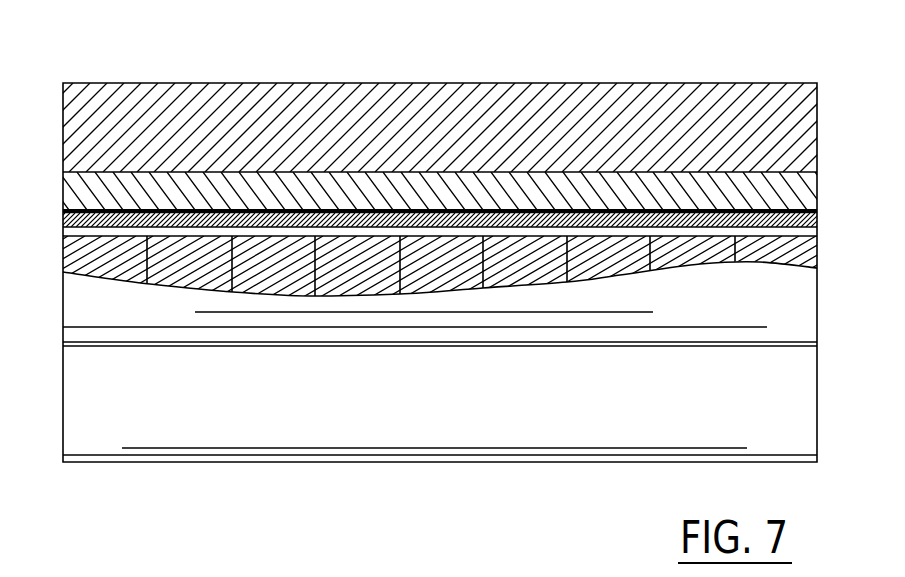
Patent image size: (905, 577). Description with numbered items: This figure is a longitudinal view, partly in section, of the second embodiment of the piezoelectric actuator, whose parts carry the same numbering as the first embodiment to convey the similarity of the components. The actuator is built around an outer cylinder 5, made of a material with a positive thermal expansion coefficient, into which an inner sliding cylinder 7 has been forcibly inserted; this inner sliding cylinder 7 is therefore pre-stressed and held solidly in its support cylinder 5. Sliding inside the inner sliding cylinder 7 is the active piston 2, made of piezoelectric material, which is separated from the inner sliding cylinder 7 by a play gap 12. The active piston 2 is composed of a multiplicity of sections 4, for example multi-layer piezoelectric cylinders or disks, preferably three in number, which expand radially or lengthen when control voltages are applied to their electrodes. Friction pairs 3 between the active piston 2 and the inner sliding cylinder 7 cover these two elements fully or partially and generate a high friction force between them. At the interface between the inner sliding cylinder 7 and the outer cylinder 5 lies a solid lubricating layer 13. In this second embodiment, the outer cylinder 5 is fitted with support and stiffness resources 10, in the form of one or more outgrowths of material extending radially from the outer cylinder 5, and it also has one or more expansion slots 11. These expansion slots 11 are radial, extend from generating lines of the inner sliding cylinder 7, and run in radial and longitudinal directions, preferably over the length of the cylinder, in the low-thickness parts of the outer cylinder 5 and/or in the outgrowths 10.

The active piston 2 is at (100, 258).
The friction pairs 3 is at (210, 208).
The sections 4 is at (622, 268).
The outer cylinder 5 is at (265, 165).
The inner sliding cylinder 7 is at (717, 208).
The support and stiffness resources 10 is at (155, 420).
The expansion slots 11 is at (108, 195).
The play gap 12 is at (814, 233).
The solid lubricating layer 13 is at (788, 205).